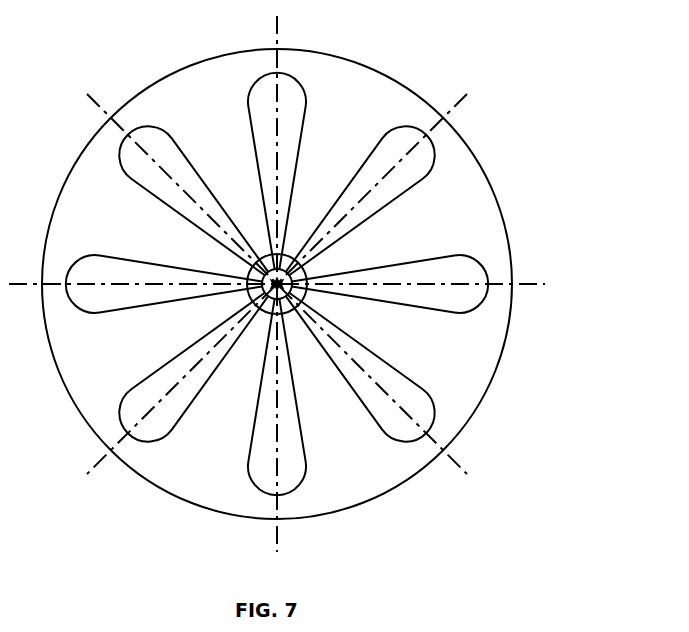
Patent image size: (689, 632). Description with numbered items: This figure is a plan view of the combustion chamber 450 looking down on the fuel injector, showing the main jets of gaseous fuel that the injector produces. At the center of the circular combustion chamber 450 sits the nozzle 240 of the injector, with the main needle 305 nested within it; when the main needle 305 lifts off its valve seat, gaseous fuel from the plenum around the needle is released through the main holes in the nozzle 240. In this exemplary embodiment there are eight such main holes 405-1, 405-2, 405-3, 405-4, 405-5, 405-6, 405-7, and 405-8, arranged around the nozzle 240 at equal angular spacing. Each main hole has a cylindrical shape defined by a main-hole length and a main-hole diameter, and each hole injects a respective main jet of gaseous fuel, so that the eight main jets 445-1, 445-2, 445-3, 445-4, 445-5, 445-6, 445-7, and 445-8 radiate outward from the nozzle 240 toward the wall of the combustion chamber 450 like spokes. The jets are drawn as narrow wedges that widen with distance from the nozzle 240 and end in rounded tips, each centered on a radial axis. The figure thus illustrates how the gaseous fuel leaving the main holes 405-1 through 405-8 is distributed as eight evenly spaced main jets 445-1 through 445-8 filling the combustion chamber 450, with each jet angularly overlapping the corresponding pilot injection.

The combustion chamber 450 is at (238, 152).
The nozzle 240 is at (305, 272).
The main needle 305 is at (305, 298).
The main jet 445-1 is at (426, 258).
The main jet 445-2 is at (406, 130).
The main jet 445-3 is at (247, 106).
The main jet 445-4 is at (118, 180).
The main jet 445-5 is at (98, 313).
The main jet 445-6 is at (176, 436).
The main jet 445-7 is at (308, 460).
The main jet 445-8 is at (445, 380).
The main hole 405-1 is at (306, 268).
The main hole 405-2 is at (290, 256).
The main hole 405-3 is at (268, 256).
The main hole 405-4 is at (256, 262).
The main hole 405-5 is at (250, 300).
The main hole 405-6 is at (265, 306).
The main hole 405-7 is at (290, 306).
The main hole 405-8 is at (302, 300).